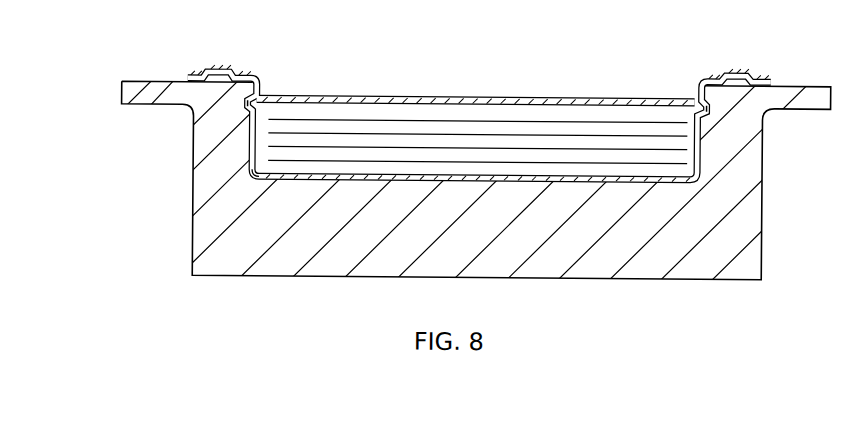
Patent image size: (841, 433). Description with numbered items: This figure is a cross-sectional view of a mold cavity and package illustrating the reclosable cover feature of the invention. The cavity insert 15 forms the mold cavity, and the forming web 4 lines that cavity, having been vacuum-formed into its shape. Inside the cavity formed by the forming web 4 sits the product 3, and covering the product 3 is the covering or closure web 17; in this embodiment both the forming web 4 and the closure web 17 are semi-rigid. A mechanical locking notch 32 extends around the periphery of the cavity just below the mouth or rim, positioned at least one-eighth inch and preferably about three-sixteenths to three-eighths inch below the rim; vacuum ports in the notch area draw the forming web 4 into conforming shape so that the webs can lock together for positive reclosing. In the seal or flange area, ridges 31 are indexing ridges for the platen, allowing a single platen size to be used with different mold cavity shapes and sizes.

The product 3 is at (466, 173).
The forming web 4 is at (262, 180).
The cavity insert 15 is at (470, 250).
The closure web 17 is at (334, 97).
The ridges 31 is at (217, 71).
The mechanical locking notch 32 is at (245, 107).